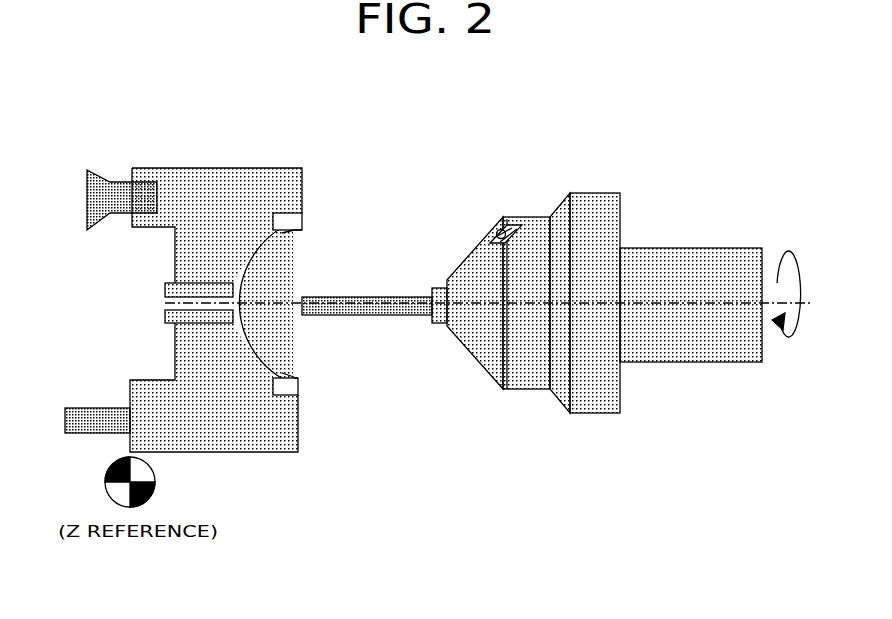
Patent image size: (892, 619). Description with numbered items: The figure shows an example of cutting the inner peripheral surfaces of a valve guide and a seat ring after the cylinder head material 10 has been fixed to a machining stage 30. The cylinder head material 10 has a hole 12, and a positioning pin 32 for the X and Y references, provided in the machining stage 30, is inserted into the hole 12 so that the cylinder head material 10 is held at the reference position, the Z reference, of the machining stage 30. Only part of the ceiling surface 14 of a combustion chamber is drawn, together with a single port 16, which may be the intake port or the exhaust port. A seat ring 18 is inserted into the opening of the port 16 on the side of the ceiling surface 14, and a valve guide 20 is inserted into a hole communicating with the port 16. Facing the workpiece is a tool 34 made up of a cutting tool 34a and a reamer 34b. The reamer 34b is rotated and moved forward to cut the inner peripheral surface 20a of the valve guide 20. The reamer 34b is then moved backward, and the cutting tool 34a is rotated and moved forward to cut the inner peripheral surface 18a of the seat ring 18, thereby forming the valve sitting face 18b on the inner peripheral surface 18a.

The cylinder head material 10 is at (216, 140).
The hole 12 is at (148, 166).
The ceiling surface 14 is at (300, 190).
The port 16 is at (262, 356).
The seat ring 18 is at (297, 228).
The inner peripheral surface of the seat ring 18a is at (285, 235).
The valve sitting face 18b is at (294, 233).
The valve guide 20 is at (165, 283).
The inner peripheral surface of the valve guide 20a is at (170, 304).
The machining stage 30 is at (107, 408).
The positioning pin 32 is at (113, 182).
The tool 34 is at (624, 178).
The cutting tool 34a is at (495, 222).
The reamer 34b is at (403, 297).